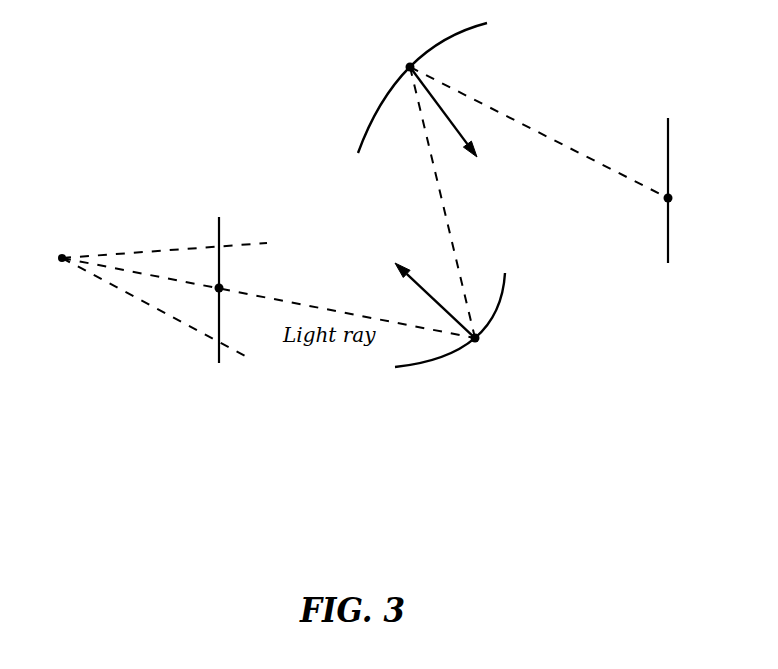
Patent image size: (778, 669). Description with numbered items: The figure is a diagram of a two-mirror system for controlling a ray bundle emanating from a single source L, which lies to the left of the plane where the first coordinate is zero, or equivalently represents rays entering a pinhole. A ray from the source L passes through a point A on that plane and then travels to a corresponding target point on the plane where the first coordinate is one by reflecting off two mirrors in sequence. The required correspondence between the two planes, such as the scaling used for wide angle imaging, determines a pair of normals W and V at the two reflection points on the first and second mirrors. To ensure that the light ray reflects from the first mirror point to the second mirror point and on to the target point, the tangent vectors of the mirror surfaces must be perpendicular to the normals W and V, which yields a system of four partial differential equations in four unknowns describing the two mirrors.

The source L is at (47, 258).
The point A is at (228, 290).
The normal V is at (453, 132).
The normal W is at (418, 285).